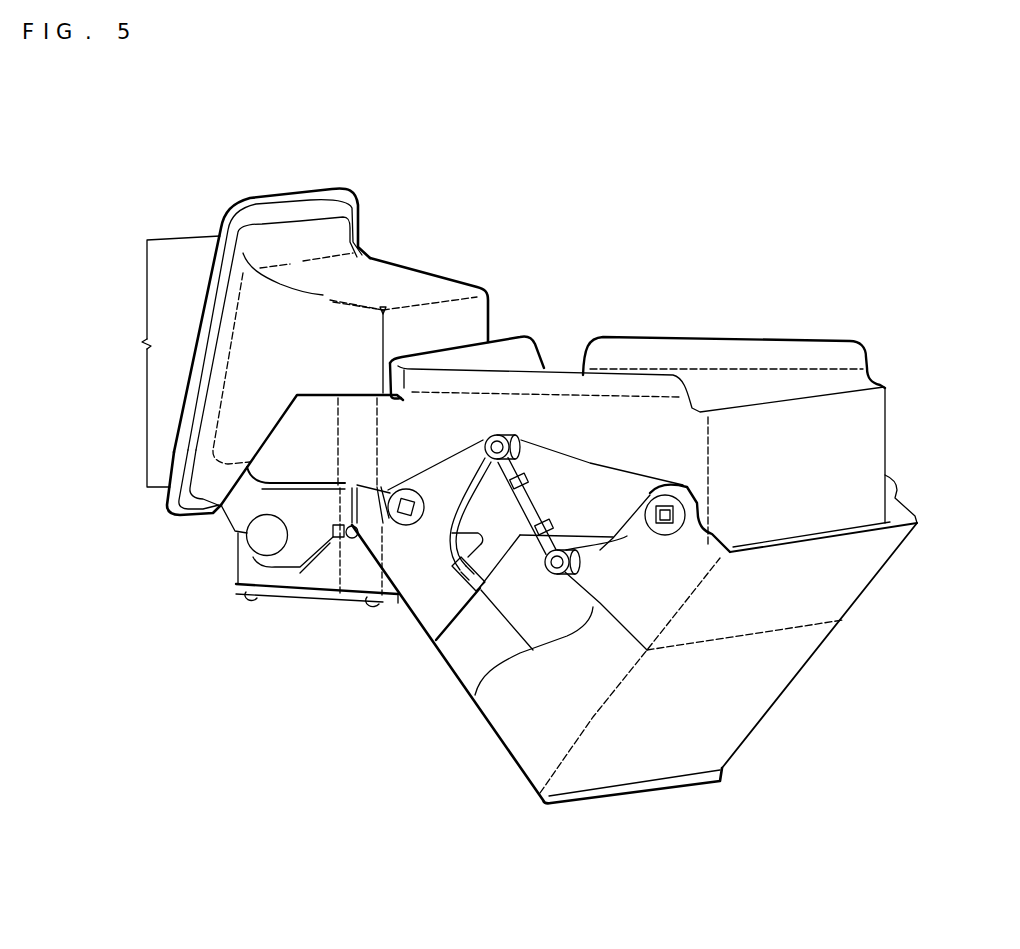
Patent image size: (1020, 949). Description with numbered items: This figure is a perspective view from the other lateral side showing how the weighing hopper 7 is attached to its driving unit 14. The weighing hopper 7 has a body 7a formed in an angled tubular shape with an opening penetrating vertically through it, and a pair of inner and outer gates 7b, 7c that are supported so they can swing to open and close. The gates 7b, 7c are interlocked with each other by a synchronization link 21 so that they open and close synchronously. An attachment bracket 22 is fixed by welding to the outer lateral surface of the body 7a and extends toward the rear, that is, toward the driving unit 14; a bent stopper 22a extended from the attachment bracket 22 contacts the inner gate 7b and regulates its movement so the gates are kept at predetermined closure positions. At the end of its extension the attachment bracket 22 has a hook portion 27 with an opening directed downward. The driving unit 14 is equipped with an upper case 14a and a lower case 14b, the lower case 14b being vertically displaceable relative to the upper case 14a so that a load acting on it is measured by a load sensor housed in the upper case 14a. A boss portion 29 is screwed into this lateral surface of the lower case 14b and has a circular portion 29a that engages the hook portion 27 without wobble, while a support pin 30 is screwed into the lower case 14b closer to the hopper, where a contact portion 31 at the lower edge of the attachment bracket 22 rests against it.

The weighing hopper 7 is at (798, 340).
The body 7a is at (877, 430).
The inner gate 7b is at (463, 660).
The outer gate 7c is at (760, 702).
The driving unit 14 is at (278, 194).
The upper case 14a is at (437, 290).
The lower case 14b is at (317, 580).
The synchronization link 21 is at (549, 492).
The attachment bracket 22 is at (277, 422).
The bent stopper 22a is at (460, 577).
The hook portion 27 is at (220, 518).
The boss portion 29 is at (243, 550).
The circular portion 29a is at (220, 557).
The support pin 30 is at (339, 560).
The contact portion 31 is at (345, 520).